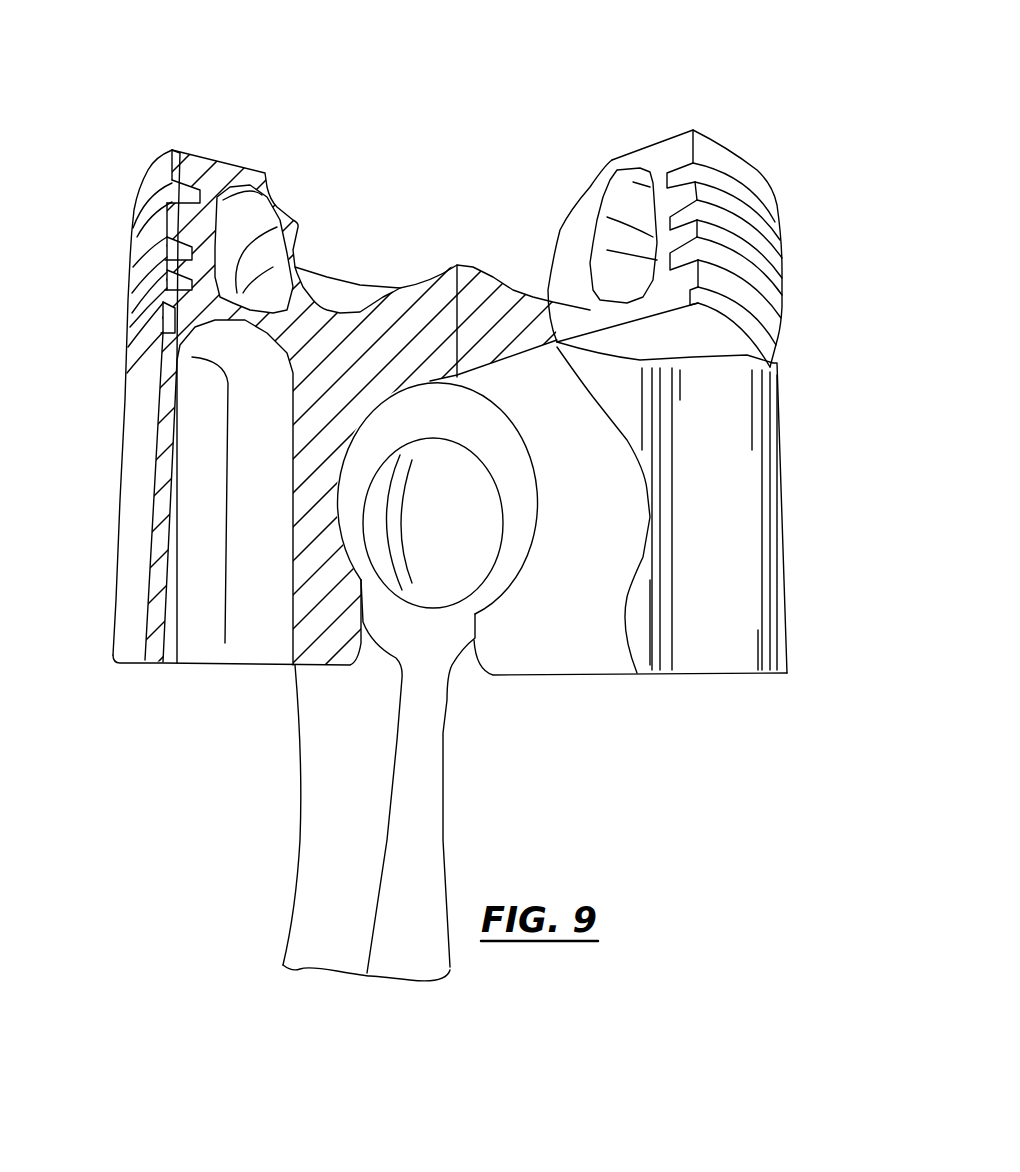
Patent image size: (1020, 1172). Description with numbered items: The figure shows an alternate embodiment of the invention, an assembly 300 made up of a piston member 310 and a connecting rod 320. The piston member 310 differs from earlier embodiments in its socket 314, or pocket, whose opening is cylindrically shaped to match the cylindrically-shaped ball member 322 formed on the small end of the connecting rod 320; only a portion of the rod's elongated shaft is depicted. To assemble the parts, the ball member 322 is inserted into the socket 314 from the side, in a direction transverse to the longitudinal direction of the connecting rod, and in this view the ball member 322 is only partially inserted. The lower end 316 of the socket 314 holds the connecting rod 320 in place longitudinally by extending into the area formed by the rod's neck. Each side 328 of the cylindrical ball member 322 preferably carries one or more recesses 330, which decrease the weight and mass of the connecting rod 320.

The assembly 300 is at (725, 114).
The piston member 310 is at (153, 442).
The socket 314 is at (597, 478).
The lower end of the socket 316 is at (533, 652).
The connecting rod 320 is at (427, 778).
The ball member 322 is at (420, 413).
The side of the ball 328 is at (510, 568).
The recess 330 is at (477, 518).